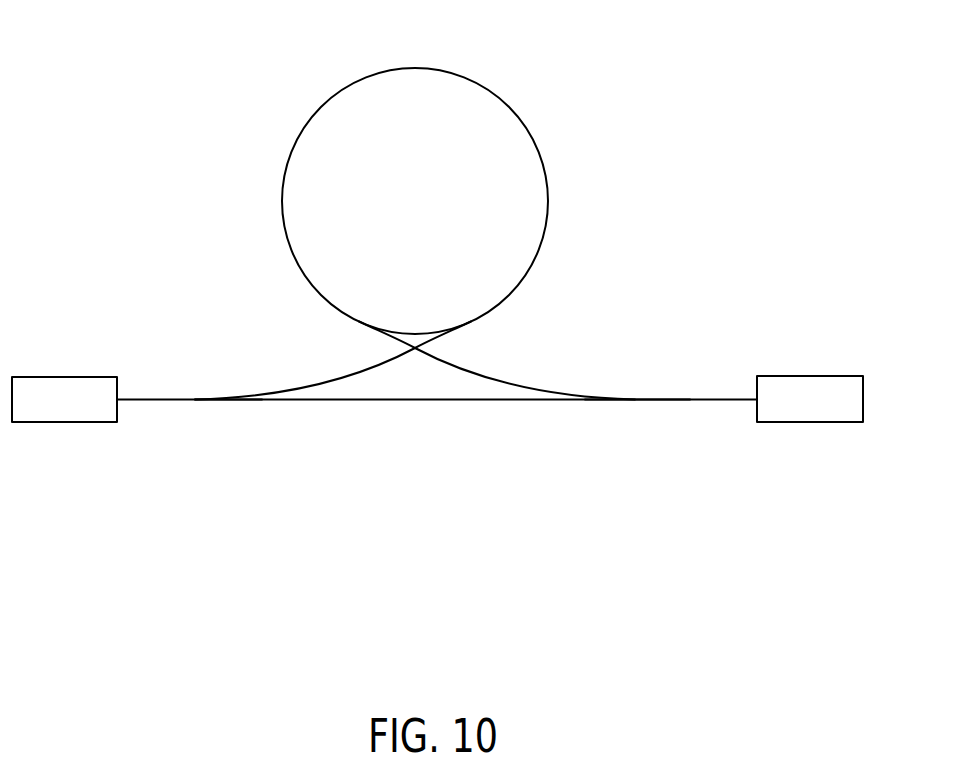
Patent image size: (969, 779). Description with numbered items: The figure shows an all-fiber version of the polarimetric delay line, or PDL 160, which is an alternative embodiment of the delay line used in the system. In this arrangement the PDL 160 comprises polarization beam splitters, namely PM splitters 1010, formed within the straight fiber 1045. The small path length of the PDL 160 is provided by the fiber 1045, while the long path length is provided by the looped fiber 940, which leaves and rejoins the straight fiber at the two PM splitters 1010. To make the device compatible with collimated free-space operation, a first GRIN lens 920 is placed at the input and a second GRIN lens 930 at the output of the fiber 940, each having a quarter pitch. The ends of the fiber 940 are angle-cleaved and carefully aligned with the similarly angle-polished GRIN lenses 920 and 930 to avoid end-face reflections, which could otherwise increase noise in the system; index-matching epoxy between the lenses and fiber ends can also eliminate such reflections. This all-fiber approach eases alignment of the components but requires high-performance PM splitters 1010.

The polarimetric delay line (PDL) 160 is at (61, 48).
The first GRIN lens 920 is at (62, 423).
The second GRIN lens 930 is at (808, 423).
The fiber 940 is at (520, 117).
The fiber 1045 is at (450, 400).
The PM splitters 1010 is at (219, 409).